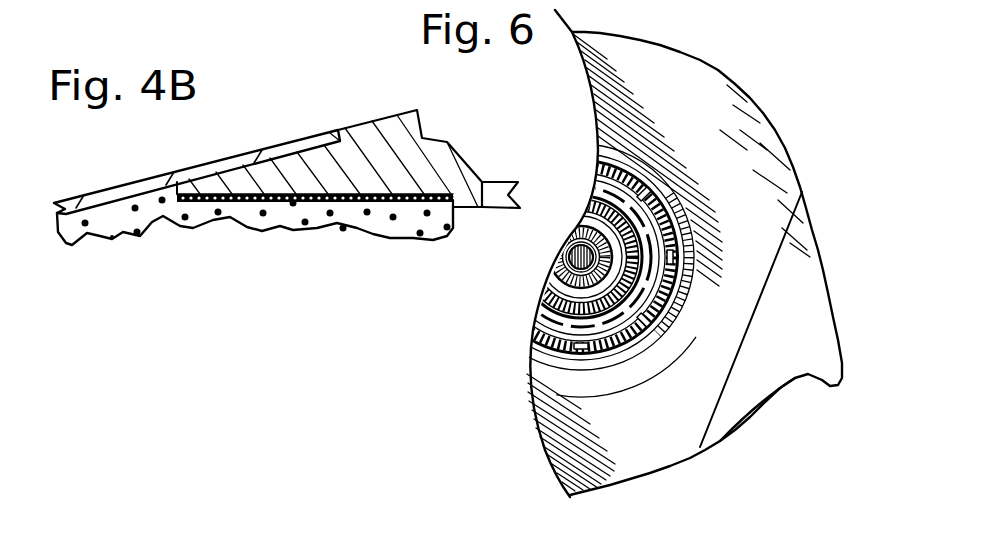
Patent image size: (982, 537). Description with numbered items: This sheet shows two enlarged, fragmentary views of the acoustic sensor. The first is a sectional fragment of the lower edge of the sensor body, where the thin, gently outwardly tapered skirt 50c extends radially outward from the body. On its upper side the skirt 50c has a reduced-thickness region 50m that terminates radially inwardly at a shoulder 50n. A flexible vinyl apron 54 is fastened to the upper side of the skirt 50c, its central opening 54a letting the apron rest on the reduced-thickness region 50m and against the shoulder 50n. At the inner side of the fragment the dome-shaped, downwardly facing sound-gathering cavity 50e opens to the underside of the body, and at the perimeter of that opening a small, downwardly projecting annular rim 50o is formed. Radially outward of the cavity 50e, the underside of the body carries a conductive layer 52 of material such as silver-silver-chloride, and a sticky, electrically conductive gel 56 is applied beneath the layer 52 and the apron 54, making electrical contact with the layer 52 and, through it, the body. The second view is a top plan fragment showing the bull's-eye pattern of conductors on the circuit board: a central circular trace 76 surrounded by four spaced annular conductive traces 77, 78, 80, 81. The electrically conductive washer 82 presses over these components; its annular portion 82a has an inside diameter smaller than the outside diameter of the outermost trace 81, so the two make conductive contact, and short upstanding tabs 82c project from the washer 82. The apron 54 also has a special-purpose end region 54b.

In FIG. 4B, the skirt 50c is at (407, 128).
In FIG. 4B, the sound-gathering cavity 50e is at (498, 163).
In FIG. 4B, the reduced-thickness region 50m is at (228, 188).
In FIG. 4B, the shoulder 50n is at (336, 133).
In FIG. 4B, the annular rim 50o is at (469, 208).
In FIG. 4B, the layer 52 is at (273, 202).
In FIG. 4B, the apron 54 is at (226, 152).
In FIG. 6, the apron 54 is at (683, 66).
In FIG. 4B, the central opening 54a is at (341, 130).
In FIG. 6, the central opening 54a is at (587, 366).
In FIG. 6, the end region 54b is at (779, 373).
In FIG. 4B, the gel 56 is at (128, 227).
In FIG. 6, the central circular trace 76 is at (571, 254).
In FIG. 6, the annular conductive trace 77 is at (585, 233).
In FIG. 6, the annular conductive trace 78 is at (558, 280).
In FIG. 6, the annular conductive trace 80 is at (547, 300).
In FIG. 6, the annular conductive trace 81 is at (593, 323).
In FIG. 6, the washer 82 is at (661, 219).
In FIG. 6, the annular portion 82a is at (695, 245).
In FIG. 6, the tabs 82c is at (674, 255).